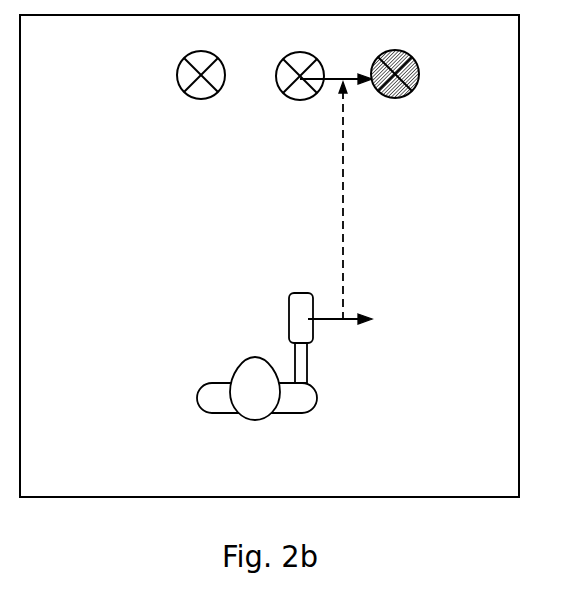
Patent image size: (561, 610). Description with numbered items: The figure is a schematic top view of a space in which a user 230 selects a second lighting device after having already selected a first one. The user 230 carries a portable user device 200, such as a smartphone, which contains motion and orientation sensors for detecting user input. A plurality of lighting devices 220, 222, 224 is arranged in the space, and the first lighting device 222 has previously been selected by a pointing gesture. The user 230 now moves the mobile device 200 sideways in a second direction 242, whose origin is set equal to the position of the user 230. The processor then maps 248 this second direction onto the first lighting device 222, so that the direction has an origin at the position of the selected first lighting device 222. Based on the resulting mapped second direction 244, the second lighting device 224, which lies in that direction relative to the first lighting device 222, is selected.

The portable user device 200 is at (292, 323).
The lighting device 220 is at (198, 102).
The first lighting device 222 is at (283, 103).
The second lighting device 224 is at (408, 97).
The user 230 is at (217, 397).
The second direction 242 is at (337, 318).
The mapped second direction 244 is at (333, 83).
The mapping 248 is at (340, 247).